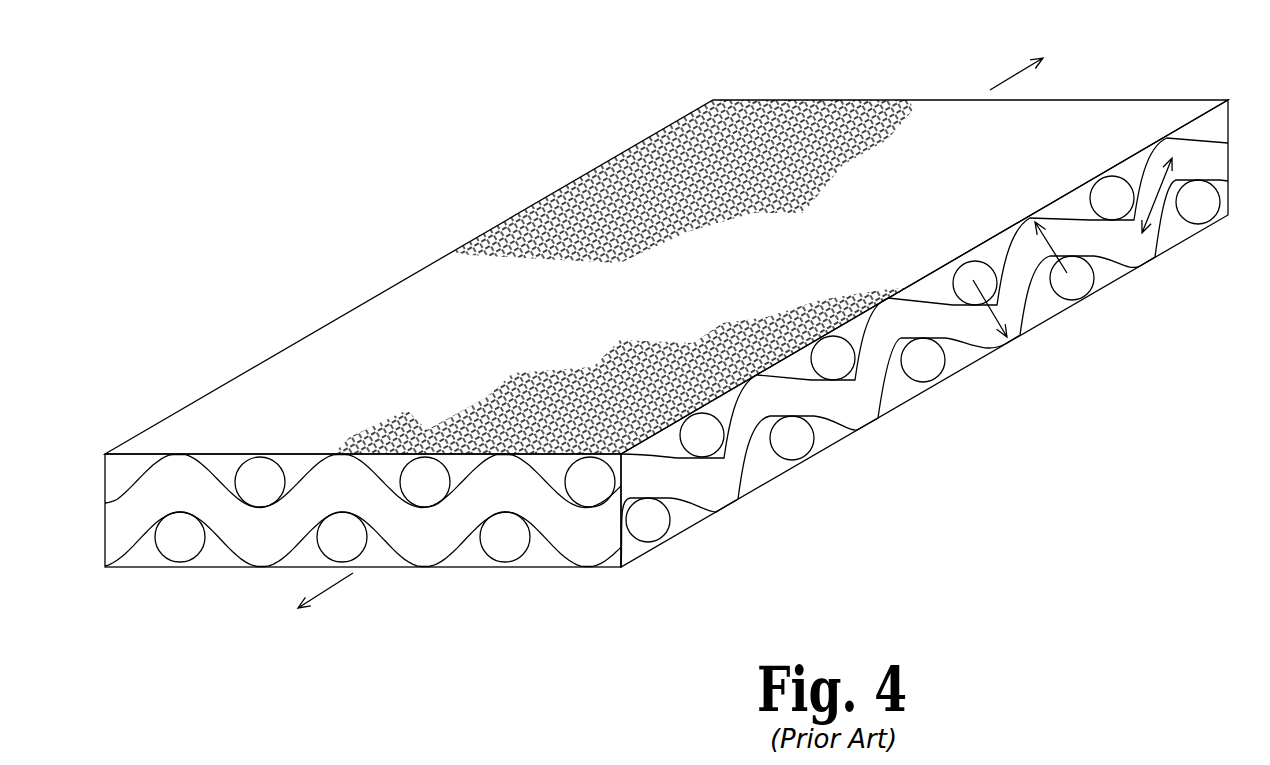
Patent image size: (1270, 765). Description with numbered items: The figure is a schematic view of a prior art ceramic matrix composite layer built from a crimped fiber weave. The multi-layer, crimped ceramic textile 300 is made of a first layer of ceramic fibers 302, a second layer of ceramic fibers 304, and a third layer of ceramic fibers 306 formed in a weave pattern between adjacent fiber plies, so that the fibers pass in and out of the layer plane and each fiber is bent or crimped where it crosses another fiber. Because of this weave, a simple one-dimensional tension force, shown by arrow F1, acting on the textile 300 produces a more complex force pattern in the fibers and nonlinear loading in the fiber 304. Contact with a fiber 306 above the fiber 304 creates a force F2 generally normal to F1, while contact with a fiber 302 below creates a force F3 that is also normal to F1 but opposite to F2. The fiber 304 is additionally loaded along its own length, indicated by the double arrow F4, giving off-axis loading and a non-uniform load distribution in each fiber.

The multi-layer crimped ceramic textile 300 is at (358, 124).
The first layer of ceramic fibers 302 is at (1080, 283).
The second layer of ceramic fibers 304 is at (963, 335).
The third layer of ceramic fibers 306 is at (712, 443).
The tension force F1 is at (327, 593).
The contact force from fiber above F2 is at (1030, 297).
The contact force from fiber below F3 is at (1073, 207).
The longitudinal load F4 is at (1173, 200).